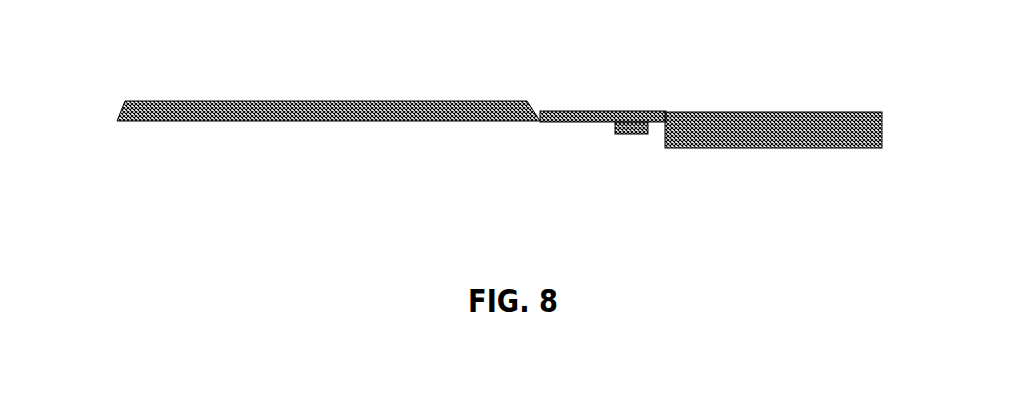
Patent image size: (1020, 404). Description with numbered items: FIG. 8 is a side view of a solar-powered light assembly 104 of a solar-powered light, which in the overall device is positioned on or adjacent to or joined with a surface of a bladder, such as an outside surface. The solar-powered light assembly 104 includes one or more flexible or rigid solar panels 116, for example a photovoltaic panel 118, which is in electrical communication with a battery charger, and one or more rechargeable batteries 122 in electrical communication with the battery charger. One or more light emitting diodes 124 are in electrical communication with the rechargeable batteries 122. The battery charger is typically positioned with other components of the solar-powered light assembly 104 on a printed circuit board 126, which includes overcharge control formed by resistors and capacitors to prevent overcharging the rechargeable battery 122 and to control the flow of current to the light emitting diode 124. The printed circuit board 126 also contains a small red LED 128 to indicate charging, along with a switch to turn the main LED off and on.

The solar-powered light assembly 104 is at (244, 182).
The solar panel 116 is at (310, 102).
The photovoltaic panel 118 is at (328, 111).
The rechargeable battery 122 is at (853, 113).
The light emitting diode 124 is at (628, 134).
The printed circuit board 126 is at (621, 112).
The small red LED 128 is at (590, 110).